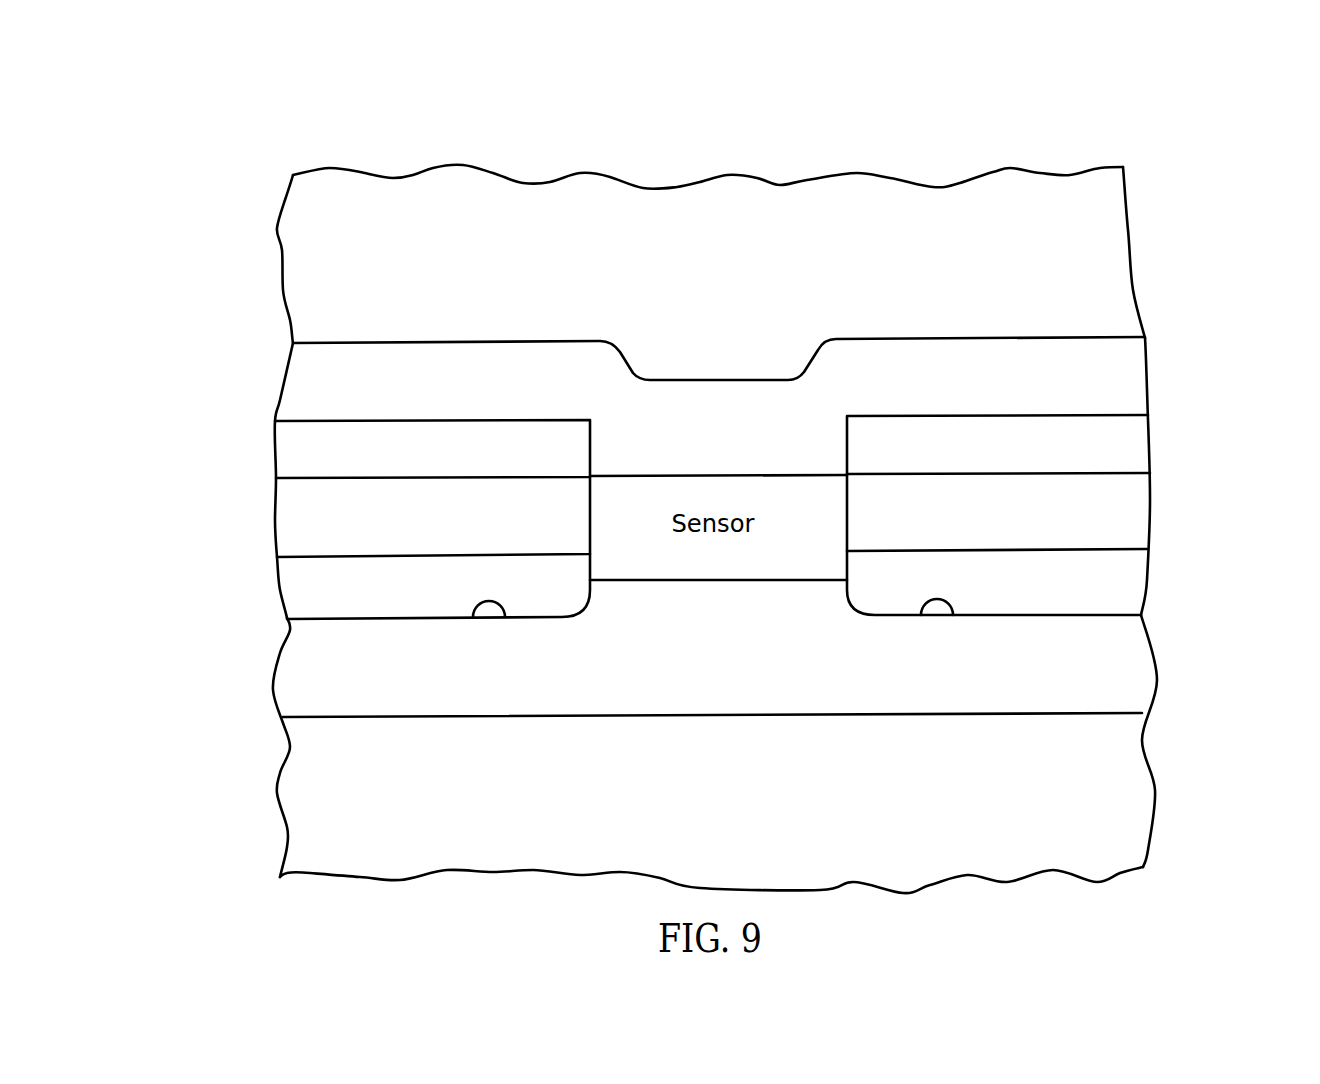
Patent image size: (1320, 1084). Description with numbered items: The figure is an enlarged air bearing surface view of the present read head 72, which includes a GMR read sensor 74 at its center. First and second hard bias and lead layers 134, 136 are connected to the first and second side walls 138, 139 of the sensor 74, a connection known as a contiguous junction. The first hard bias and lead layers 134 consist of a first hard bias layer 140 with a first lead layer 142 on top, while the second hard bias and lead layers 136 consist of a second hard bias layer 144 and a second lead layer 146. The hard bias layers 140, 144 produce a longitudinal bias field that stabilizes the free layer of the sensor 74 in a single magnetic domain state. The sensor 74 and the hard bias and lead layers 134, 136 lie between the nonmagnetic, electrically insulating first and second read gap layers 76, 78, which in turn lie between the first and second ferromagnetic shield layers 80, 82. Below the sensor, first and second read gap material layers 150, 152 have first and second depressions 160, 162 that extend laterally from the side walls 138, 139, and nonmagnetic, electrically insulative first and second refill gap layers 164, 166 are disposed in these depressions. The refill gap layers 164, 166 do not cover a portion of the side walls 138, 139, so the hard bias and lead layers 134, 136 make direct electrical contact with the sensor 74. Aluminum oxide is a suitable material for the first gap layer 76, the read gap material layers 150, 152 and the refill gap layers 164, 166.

The read head 72 is at (768, 143).
The sensor 74 is at (707, 476).
The first read gap layer 76 is at (715, 676).
The second read gap layer 78 is at (777, 451).
The first ferromagnetic shield layer 80 is at (714, 811).
The second ferromagnetic shield layer 82 is at (774, 281).
The first hard bias and lead layers 134 is at (188, 425).
The second hard bias and lead layers 136 is at (1242, 413).
The first side wall 138 is at (590, 508).
The second side wall 139 is at (847, 512).
The first hard bias layer 140 is at (312, 528).
The first lead layer 142 is at (292, 445).
The second hard bias layer 144 is at (1107, 525).
The second lead layer 146 is at (1105, 447).
The first read gap material layer 150 is at (389, 682).
The second read gap material layer 152 is at (975, 676).
The first depression 160 is at (473, 617).
The second depression 162 is at (953, 615).
The first refill gap layer 164 is at (310, 587).
The second refill gap layer 166 is at (1105, 585).